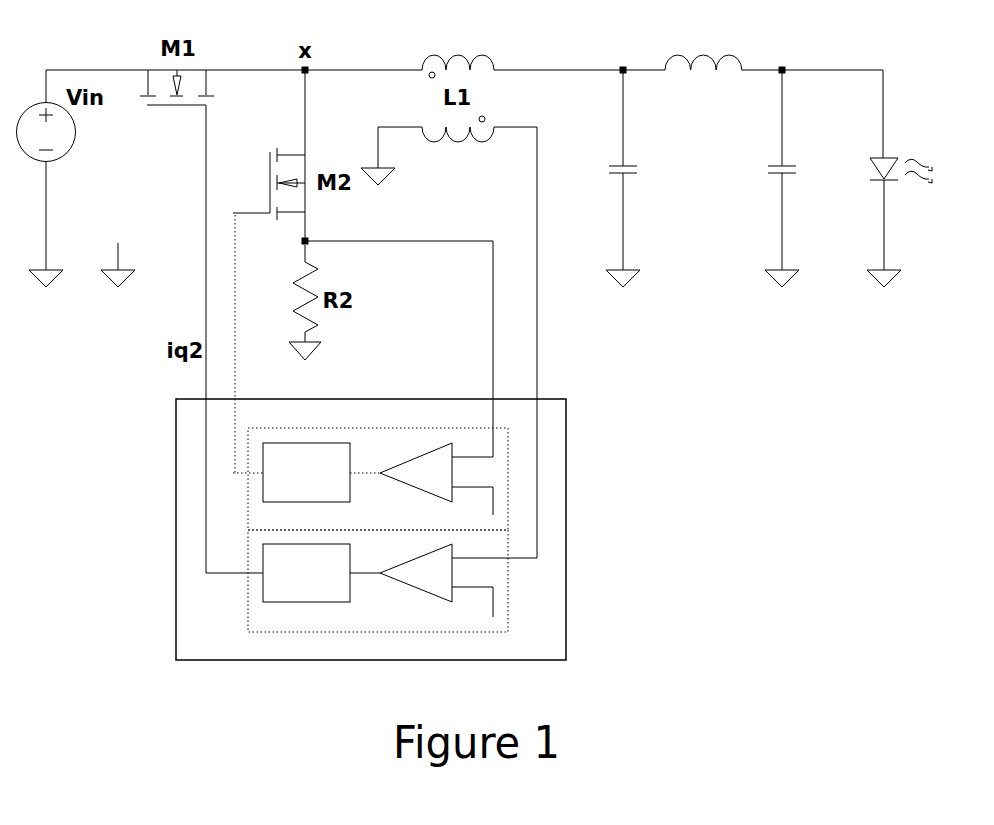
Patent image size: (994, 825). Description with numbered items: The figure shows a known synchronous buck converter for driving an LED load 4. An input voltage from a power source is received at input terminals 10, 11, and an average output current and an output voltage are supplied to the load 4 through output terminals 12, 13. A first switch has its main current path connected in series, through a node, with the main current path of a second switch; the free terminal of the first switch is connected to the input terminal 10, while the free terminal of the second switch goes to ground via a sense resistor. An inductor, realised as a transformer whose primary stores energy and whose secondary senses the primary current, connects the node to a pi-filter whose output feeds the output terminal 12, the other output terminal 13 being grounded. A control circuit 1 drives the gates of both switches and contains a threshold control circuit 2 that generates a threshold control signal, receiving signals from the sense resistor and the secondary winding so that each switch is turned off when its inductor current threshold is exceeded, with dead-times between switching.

The control circuit 1 is at (371, 518).
The threshold control circuit 2 is at (371, 533).
The load 4 is at (887, 170).
The input terminal 10 is at (97, 56).
The input terminal 11 is at (119, 252).
The output terminal 12 is at (832, 57).
The output terminal 13 is at (876, 255).